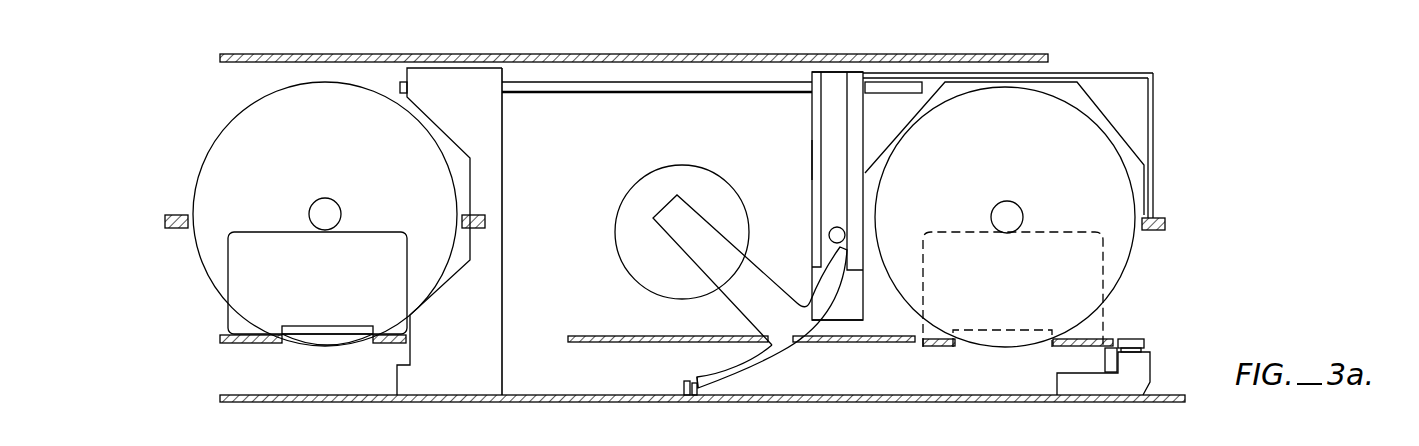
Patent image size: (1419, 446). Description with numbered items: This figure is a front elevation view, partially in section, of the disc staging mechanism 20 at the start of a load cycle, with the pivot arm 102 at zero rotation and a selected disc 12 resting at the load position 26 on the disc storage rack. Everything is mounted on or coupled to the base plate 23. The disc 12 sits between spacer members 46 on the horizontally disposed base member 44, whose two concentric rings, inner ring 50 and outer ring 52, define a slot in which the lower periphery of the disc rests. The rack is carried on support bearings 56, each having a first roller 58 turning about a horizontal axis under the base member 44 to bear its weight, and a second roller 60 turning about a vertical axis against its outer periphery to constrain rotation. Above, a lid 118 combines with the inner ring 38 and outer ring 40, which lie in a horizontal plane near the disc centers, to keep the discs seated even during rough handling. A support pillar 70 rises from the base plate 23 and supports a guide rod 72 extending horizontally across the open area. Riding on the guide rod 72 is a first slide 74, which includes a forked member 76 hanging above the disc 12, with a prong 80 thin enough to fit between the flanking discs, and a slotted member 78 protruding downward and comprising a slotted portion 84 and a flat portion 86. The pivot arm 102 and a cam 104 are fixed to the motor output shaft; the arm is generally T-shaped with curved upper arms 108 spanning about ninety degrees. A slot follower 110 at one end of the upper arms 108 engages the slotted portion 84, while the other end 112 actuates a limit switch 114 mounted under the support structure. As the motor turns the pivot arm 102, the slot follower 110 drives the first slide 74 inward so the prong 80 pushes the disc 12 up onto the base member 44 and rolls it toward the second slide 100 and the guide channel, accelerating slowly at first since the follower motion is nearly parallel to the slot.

The disc 12 is at (338, 157).
The disc staging mechanism 20 is at (758, 38).
The base plate 23 is at (316, 394).
The load position 26 is at (1010, 177).
The inner ring 38 is at (483, 213).
The outer ring 40 is at (172, 215).
The base member 44 is at (929, 348).
The spacer member 46 is at (228, 265).
The inner ring 50 is at (390, 343).
The outer ring 52 is at (247, 343).
The support bearing 56 is at (1151, 368).
The first roller 58 is at (1104, 358).
The second roller 60 is at (1137, 341).
The support pillar 70 is at (503, 322).
The guide rod 72 is at (562, 95).
The first slide 74 is at (862, 68).
The forked member 76 is at (1110, 72).
The slotted member 78 is at (805, 159).
The prong 80 is at (1156, 189).
The slotted portion 84 is at (811, 127).
The flat portion 86 is at (864, 312).
The second slide 100 is at (598, 316).
The pivot arm 102 is at (733, 305).
The cam 104 is at (620, 256).
The upper arms 108 is at (764, 366).
The slot follower 110 is at (829, 250).
The other end 112 is at (699, 380).
The limit switch 114 is at (685, 390).
The lid 118 is at (624, 54).